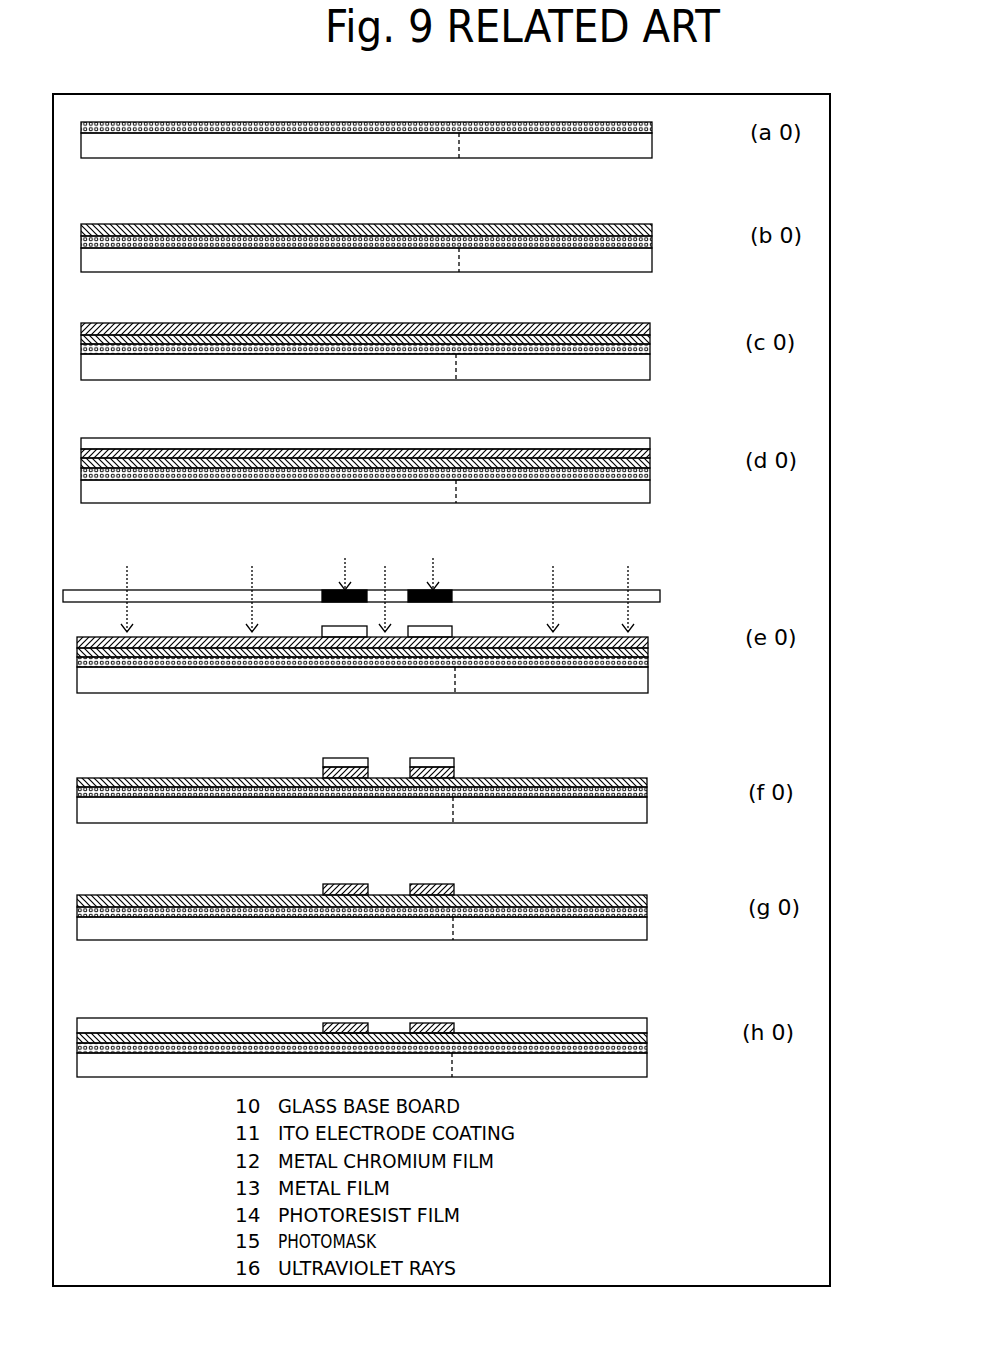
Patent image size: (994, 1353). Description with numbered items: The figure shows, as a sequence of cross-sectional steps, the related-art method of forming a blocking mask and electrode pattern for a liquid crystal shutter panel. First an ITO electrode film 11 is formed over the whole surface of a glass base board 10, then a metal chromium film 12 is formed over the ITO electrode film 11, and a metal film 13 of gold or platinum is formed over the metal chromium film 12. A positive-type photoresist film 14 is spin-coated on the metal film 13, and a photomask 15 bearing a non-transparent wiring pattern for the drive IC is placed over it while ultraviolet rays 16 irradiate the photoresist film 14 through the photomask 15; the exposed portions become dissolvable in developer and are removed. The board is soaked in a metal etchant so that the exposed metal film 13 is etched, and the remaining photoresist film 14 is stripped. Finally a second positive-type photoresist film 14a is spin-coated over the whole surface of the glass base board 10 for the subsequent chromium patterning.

The glass base board 10 is at (652, 150).
The ITO electrode film 11 is at (652, 126).
The metal chromium film 12 is at (652, 226).
The metal film 13 is at (650, 325).
The photoresist film 14 is at (650, 440).
The photoresist film 14a is at (647, 1018).
The photomask 15 is at (660, 593).
The ultraviolet rays 16 is at (628, 567).